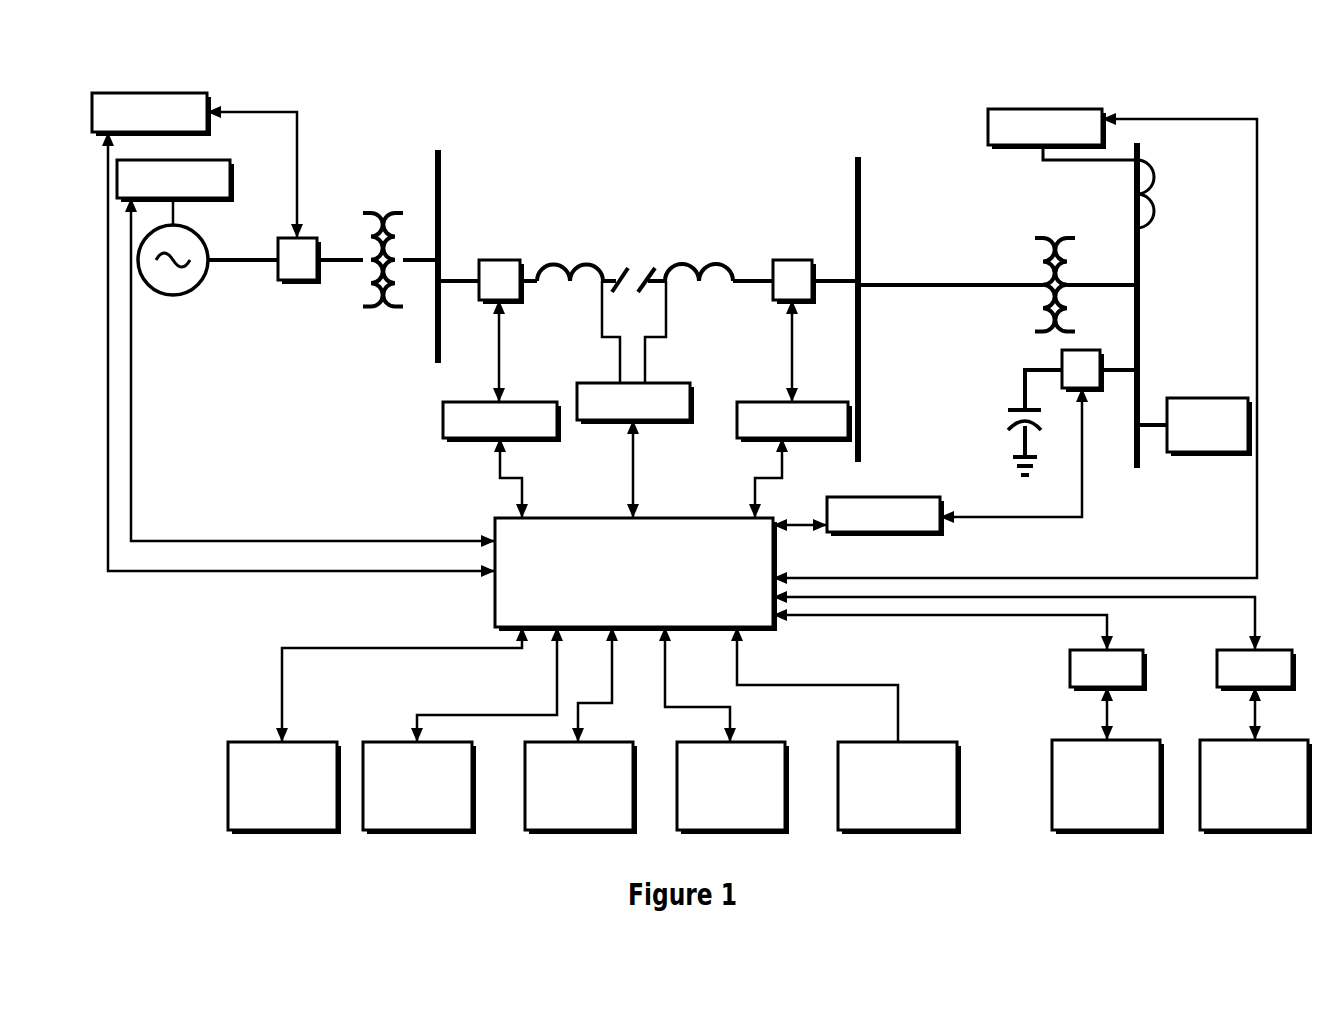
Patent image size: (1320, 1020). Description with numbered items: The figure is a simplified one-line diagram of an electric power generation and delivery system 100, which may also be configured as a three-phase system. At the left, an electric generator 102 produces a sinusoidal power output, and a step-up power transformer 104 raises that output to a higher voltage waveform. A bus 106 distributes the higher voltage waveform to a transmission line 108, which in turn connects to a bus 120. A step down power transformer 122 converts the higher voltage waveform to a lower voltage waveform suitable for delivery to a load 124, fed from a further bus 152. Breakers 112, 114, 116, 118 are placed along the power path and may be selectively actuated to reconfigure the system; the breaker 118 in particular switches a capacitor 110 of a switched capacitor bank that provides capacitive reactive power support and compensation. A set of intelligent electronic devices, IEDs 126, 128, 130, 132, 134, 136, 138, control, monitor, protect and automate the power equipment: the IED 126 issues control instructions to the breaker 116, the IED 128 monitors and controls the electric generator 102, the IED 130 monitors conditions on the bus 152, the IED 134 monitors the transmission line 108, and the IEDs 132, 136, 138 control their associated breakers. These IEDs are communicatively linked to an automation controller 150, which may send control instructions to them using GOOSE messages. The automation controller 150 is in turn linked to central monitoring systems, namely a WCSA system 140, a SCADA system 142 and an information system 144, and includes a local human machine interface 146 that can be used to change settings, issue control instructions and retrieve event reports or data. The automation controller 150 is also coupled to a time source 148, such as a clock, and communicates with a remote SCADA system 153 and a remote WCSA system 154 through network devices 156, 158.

The electric power generation and delivery system 100 is at (128, 61).
The electric generator 102 is at (198, 232).
The step-up power transformer 104 is at (382, 307).
The bus 106 is at (436, 190).
The transmission line 108 is at (758, 275).
The capacitor 110 is at (1010, 398).
The breaker 112 is at (488, 291).
The breaker 114 is at (781, 291).
The breaker 116 is at (286, 270).
The breaker 118 is at (1070, 380).
The bus 120 is at (861, 293).
The step down power transformer 122 is at (1055, 235).
The load 124 is at (1195, 447).
The IED 126 is at (162, 93).
The IED 128 is at (207, 160).
The IED 130 is at (1103, 108).
The IED 132 is at (460, 443).
The IED 134 is at (620, 425).
The IED 136 is at (745, 440).
The IED 138 is at (897, 497).
The wide area control and situational awareness (WCSA) system 140 is at (270, 823).
The supervisory control and data acquisition (SCADA) system 142 is at (405, 823).
The information system 144 is at (566, 811).
The local human machine interface 146 is at (718, 811).
The time source 148 is at (885, 823).
The automation controller 150 is at (621, 597).
The bus 152 is at (1141, 270).
The remote SCADA system 153 is at (1093, 821).
The remote WCSA system 154 is at (1241, 821).
The network device 156 is at (960, 677).
The network device 158 is at (1034, 668).